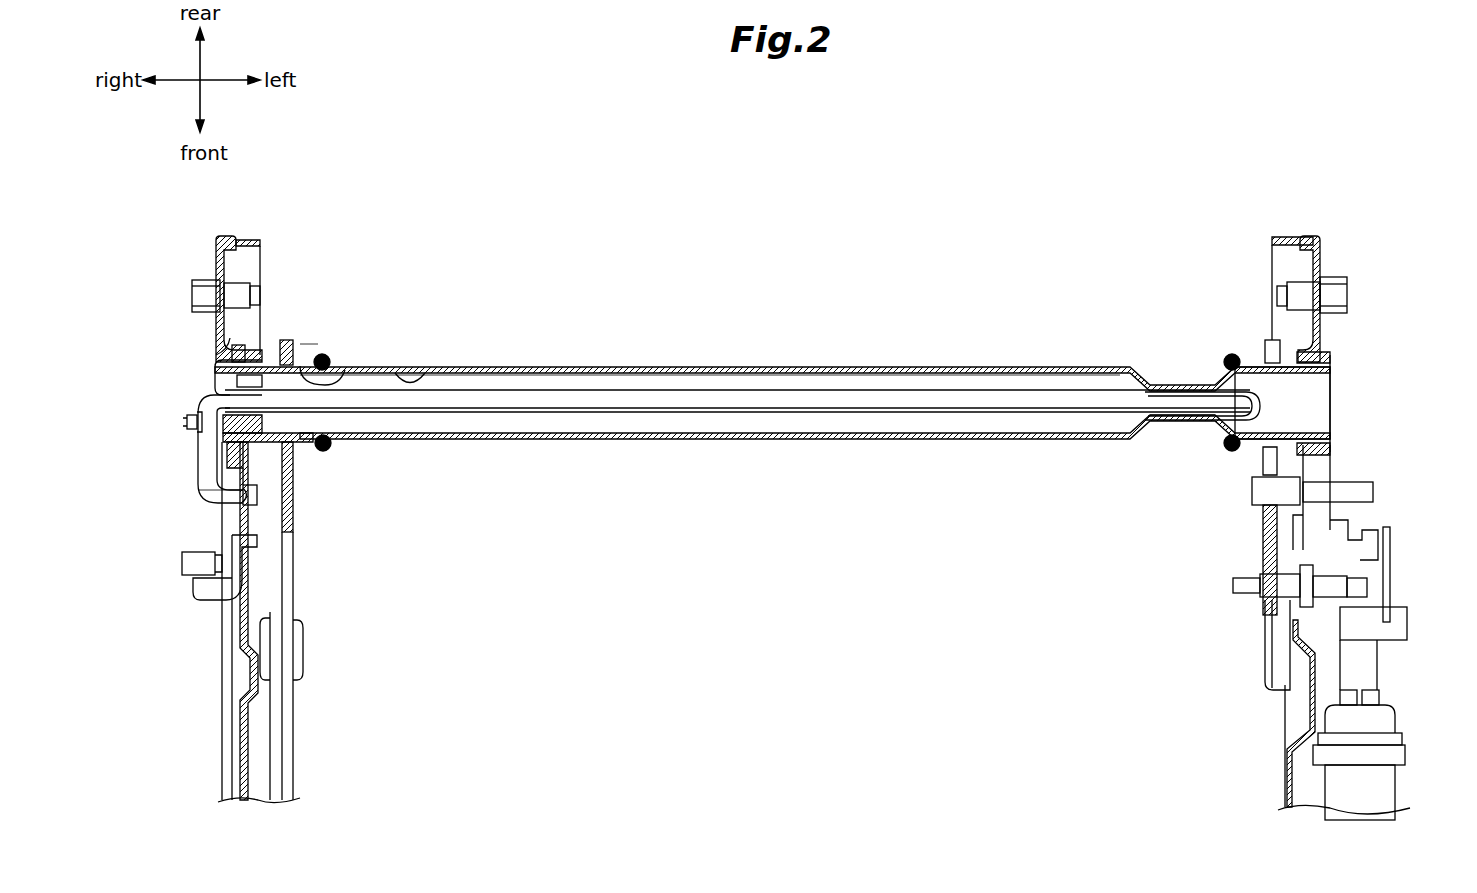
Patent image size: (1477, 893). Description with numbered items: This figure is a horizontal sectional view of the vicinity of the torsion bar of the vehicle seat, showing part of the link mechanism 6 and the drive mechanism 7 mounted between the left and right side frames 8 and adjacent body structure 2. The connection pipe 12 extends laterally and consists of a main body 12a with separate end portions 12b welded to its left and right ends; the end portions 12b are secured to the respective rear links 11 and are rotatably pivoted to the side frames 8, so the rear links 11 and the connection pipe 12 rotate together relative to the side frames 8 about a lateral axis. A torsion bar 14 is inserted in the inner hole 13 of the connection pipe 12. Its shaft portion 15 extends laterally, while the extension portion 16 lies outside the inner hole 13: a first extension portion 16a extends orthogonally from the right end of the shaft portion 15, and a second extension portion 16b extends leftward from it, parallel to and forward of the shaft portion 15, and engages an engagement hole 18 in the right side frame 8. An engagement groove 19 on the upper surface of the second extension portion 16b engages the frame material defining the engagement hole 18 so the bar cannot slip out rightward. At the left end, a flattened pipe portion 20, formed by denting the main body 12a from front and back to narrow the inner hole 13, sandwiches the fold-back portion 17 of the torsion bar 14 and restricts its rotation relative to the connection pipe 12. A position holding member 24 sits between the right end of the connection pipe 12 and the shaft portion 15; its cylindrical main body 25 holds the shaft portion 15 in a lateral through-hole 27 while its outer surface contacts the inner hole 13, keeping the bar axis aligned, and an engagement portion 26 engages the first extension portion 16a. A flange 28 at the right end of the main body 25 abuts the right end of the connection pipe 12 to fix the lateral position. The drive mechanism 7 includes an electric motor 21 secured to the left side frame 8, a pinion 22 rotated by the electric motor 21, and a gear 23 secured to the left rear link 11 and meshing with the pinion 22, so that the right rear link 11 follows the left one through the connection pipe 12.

The vehicle body panel 2 is at (283, 784).
The link mechanism 6 is at (298, 600).
The drive mechanism 7 is at (1400, 720).
The side frame 8 is at (243, 742).
The rear link 11 is at (293, 547).
The connection pipe 12 is at (772, 395).
The main body 12a is at (762, 367).
The end portion 12b is at (262, 362).
The inner hole 13 is at (407, 366).
The torsion bar 14 is at (468, 388).
The shaft portion 15 is at (585, 390).
The extension portion 16 is at (160, 463).
The first extension portion 16a is at (198, 460).
The second extension portion 16b is at (230, 502).
The fold-back portion 17 is at (1198, 393).
The engagement hole 18 is at (258, 500).
The engagement groove 19 is at (258, 490).
The flattened pipe portion 20 is at (1168, 423).
The electric motor 21 is at (1395, 786).
The pinion 22 is at (1262, 603).
The gear 23 is at (1362, 548).
The position holding member 24 is at (212, 372).
The main body 25 is at (235, 417).
The engagement portion 26 is at (185, 421).
The through-hole 27 is at (305, 382).
The flange 28 is at (214, 345).